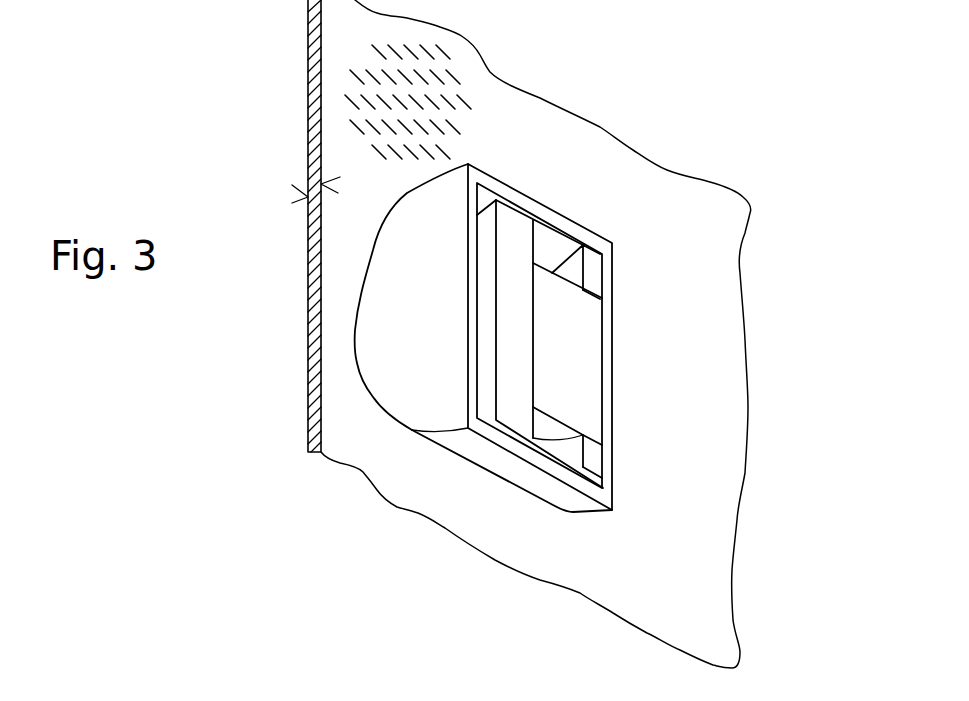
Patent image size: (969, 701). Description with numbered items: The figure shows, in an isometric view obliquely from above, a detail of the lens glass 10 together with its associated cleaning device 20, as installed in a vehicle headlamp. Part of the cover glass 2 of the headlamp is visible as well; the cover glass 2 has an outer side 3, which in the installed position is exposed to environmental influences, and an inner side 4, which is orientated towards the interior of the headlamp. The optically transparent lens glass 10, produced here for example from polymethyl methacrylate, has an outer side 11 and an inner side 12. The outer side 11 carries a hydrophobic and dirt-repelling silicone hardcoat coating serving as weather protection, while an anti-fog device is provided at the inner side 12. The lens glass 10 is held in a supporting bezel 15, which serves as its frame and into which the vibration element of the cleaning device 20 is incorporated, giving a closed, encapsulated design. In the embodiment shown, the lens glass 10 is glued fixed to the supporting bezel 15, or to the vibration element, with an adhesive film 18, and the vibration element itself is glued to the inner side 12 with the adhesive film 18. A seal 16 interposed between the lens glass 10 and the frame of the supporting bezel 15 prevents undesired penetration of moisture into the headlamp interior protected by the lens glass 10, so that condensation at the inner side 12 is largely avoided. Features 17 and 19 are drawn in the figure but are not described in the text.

The cover glass 2 is at (310, 452).
The outer side 3 is at (340, 177).
The inner side 4 is at (292, 203).
The lens glass 10 is at (490, 368).
The outer side 11 is at (605, 399).
The inner side 12 is at (568, 347).
The supporting bezel 15 is at (654, 368).
The seal 16 is at (592, 271).
The housing 17 is at (420, 388).
The adhesive film 18 is at (407, 302).
The bent tongue 19 is at (598, 296).
The cleaning device 20 is at (533, 128).